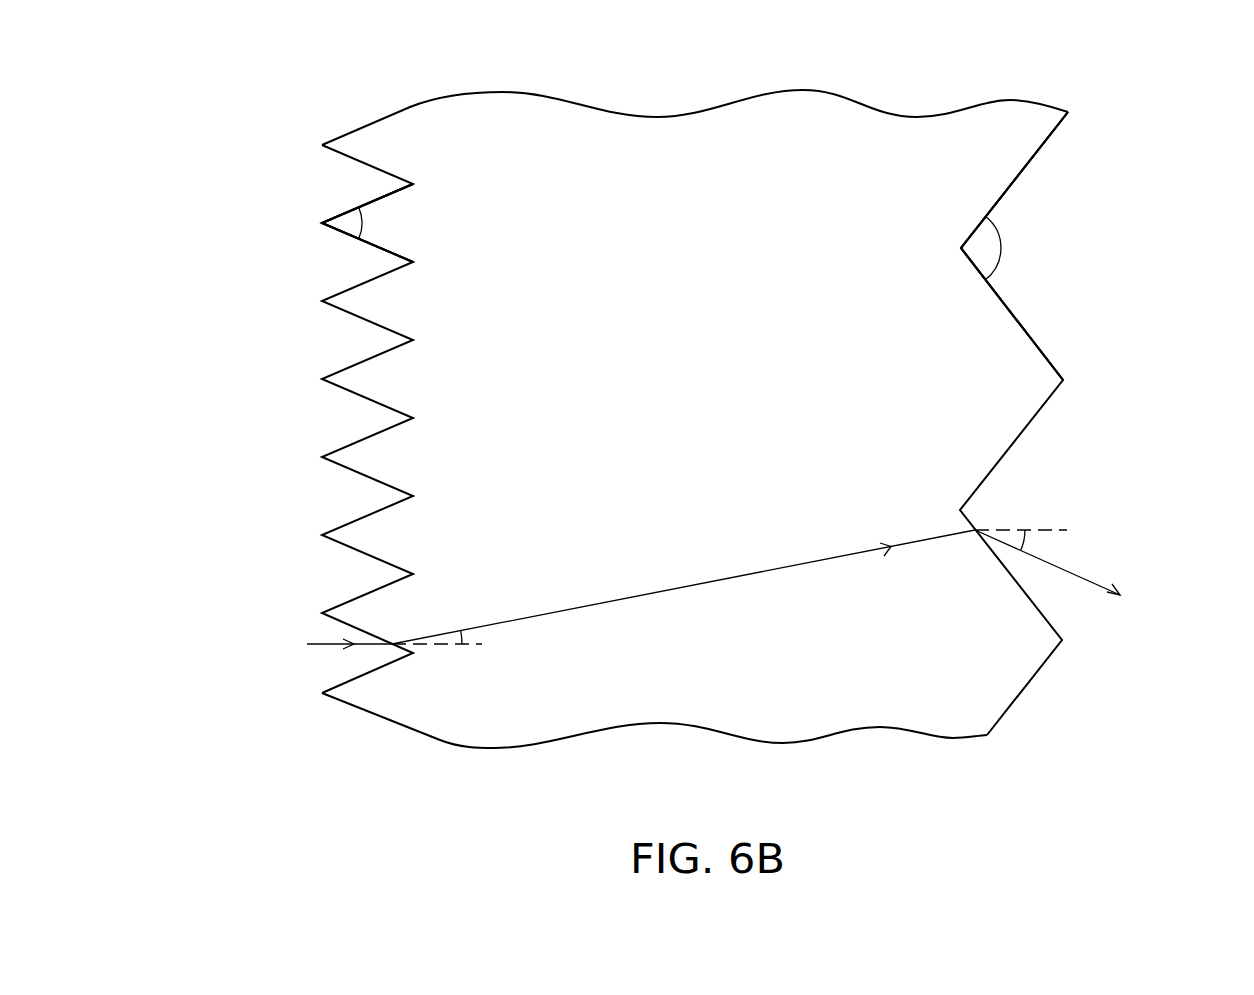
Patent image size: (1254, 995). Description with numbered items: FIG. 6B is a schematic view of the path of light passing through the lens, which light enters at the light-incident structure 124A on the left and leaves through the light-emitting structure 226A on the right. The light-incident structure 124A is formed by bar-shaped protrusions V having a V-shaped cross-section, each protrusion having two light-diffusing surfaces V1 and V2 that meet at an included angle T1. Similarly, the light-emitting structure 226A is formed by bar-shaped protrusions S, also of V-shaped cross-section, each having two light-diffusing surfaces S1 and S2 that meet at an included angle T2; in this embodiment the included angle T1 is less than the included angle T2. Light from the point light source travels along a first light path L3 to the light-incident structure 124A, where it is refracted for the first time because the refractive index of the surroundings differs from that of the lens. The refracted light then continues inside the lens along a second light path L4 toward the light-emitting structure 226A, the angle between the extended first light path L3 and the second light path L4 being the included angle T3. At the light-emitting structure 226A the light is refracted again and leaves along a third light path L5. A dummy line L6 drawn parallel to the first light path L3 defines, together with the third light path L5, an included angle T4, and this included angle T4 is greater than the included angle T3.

The light-incident structure 124A is at (358, 118).
The light-emitting structure 226A is at (1007, 80).
The bar-shaped protrusions V is at (200, 178).
The light-diffusing surface V1 is at (345, 214).
The light-diffusing surface V2 is at (345, 236).
The included angle T1 is at (388, 222).
The bar-shaped protrusions S is at (1186, 195).
The light-diffusing surface S1 is at (1018, 180).
The light-diffusing surface S2 is at (1033, 337).
The included angle T2 is at (1013, 248).
The first light path L3 is at (327, 645).
The included angle T3 is at (453, 646).
The second light path L4 is at (577, 607).
The third light path L5 is at (1100, 588).
The dummy line L6 is at (1043, 528).
The included angle T4 is at (1054, 548).